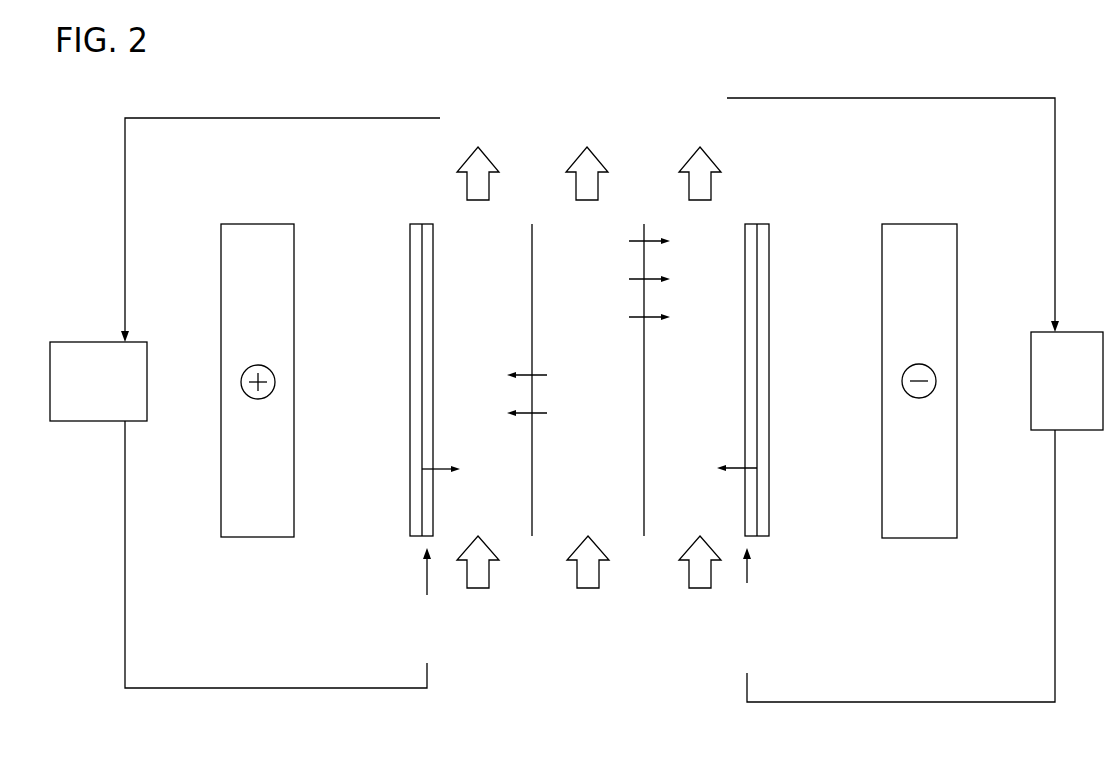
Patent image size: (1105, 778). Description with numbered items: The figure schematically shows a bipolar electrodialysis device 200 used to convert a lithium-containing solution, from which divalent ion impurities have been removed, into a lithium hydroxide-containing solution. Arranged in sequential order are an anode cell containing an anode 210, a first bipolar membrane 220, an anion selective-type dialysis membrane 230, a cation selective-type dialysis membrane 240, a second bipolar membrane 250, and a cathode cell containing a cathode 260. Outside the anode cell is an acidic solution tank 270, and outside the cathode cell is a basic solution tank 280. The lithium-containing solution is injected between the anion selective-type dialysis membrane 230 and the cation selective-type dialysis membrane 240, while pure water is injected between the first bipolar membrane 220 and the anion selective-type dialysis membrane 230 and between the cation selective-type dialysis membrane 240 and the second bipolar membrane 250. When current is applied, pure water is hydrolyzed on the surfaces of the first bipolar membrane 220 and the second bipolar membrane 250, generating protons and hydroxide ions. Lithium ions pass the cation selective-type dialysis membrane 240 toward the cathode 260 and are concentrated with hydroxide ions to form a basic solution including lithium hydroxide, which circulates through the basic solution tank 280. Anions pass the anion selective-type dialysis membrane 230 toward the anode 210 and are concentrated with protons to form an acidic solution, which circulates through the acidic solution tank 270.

The bipolar electrodialysis device 200 is at (596, 52).
The anode 210 is at (257, 365).
The first bipolar membrane 220 is at (417, 364).
The anion selective-type dialysis membrane 230 is at (532, 364).
The cation selective-type dialysis membrane 240 is at (644, 364).
The second bipolar membrane 250 is at (756, 364).
The cathode 260 is at (919, 365).
The acidic solution tank 270 is at (98, 366).
The basic solution tank 280 is at (1067, 366).